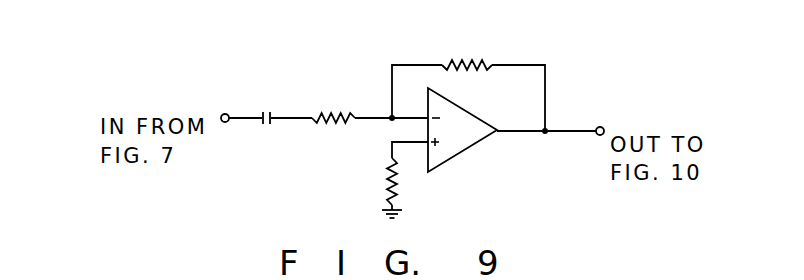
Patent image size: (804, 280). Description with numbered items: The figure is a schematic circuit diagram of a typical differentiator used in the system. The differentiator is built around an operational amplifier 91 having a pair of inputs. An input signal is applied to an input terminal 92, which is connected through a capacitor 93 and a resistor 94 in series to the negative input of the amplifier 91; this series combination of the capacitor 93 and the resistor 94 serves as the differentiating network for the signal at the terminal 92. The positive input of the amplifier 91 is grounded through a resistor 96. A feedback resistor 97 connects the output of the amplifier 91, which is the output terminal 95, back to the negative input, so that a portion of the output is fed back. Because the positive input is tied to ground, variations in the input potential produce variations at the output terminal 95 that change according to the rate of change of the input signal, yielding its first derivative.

The operational amplifier 91 is at (470, 123).
The input terminal 92 is at (222, 115).
The capacitor 93 is at (267, 111).
The resistor 94 is at (335, 112).
The output terminal 95 is at (599, 127).
The resistor 96 is at (397, 180).
The feedback resistor 97 is at (478, 61).